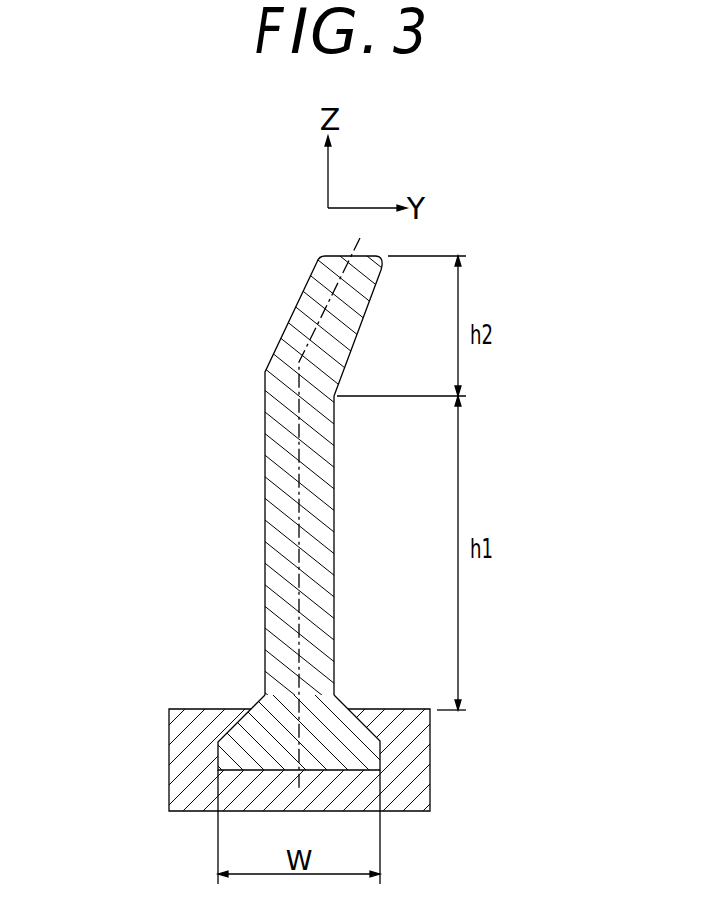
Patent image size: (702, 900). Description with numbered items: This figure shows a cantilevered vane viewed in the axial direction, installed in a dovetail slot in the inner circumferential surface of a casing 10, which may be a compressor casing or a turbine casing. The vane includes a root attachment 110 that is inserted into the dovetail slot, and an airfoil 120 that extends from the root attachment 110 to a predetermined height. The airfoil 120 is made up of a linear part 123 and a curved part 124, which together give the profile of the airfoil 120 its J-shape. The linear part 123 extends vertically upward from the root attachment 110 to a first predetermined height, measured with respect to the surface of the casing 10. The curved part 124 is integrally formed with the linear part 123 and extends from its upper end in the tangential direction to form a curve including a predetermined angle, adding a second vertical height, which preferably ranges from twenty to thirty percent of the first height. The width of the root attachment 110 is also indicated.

The casing 10 is at (412, 786).
The root attachment 110 is at (348, 740).
The airfoil 120 is at (148, 312).
The linear part 123 is at (273, 466).
The curved part 124 is at (300, 326).